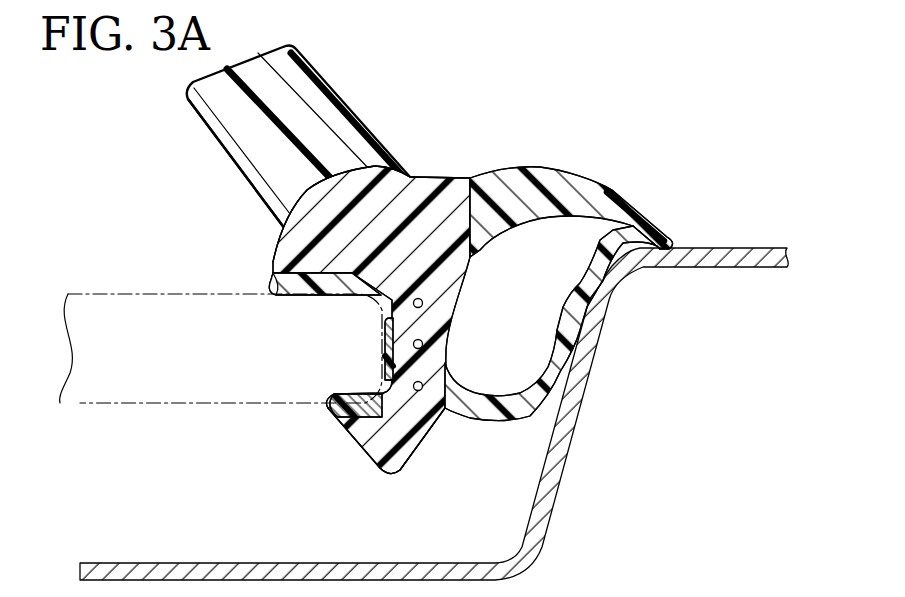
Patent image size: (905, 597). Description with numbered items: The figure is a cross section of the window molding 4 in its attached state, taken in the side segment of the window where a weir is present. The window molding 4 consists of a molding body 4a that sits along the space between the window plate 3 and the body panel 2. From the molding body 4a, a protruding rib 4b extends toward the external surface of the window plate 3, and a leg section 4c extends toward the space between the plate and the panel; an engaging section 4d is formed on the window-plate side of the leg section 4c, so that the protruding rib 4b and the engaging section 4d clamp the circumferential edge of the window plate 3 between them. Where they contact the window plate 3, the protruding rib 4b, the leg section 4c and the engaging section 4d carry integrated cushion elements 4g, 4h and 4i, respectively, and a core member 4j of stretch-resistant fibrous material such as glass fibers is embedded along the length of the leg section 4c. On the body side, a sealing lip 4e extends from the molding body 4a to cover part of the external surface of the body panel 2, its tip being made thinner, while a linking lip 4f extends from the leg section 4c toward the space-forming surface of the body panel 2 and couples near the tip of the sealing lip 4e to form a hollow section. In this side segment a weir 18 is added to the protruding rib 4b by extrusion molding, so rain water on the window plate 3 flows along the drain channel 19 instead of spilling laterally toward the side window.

The body panel 2 is at (725, 270).
The window plate 3 is at (103, 286).
The window molding 4 is at (492, 148).
The molding body 4a is at (420, 177).
The protruding rib 4b is at (270, 270).
The leg section 4c is at (380, 473).
The engaging section 4d is at (352, 440).
The sealing lip 4e is at (565, 187).
The linking lip 4f is at (530, 425).
The cushion element 4g is at (278, 300).
The cushion element 4h is at (385, 348).
The cushion element 4i is at (328, 397).
The core member 4j is at (416, 390).
The weir 18 is at (322, 61).
The drain channel 19 is at (208, 212).